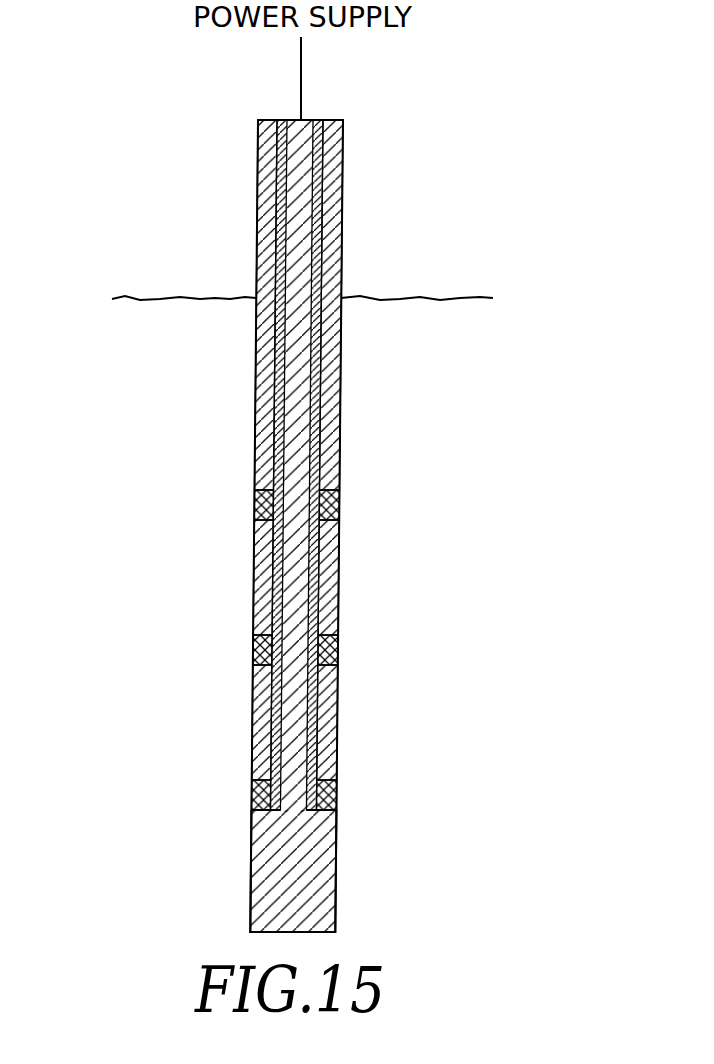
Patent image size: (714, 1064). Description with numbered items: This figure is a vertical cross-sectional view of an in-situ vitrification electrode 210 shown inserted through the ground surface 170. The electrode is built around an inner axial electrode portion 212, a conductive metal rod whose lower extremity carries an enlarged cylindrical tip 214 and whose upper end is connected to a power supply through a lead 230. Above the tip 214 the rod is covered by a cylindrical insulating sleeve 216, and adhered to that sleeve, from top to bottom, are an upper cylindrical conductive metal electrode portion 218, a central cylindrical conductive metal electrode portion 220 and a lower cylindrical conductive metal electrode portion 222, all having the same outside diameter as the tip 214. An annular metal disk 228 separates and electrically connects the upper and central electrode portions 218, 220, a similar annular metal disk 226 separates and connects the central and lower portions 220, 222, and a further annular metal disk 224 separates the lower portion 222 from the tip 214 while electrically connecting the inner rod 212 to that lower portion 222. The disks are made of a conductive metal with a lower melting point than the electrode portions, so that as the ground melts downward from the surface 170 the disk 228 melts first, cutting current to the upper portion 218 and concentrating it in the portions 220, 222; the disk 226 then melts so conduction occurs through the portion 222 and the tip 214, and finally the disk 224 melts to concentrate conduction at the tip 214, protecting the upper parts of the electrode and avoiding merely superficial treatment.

The ground surface 170 is at (157, 297).
The cylindrical electrode 210 is at (355, 615).
The inner axial electrode portion 212 is at (297, 340).
The enlarged cylindrical tip 214 is at (250, 867).
The cylindrical insulating sleeve 216 is at (320, 268).
The upper cylindrical conductive metal electrode portion 218 is at (335, 208).
The central cylindrical conductive metal electrode portion 220 is at (337, 557).
The lower cylindrical conductive metal electrode portion 222 is at (337, 753).
The annular metal disk 224 is at (252, 803).
The annular metal disk 226 is at (252, 652).
The annular metal disk 228 is at (337, 503).
The lead 230 is at (301, 78).